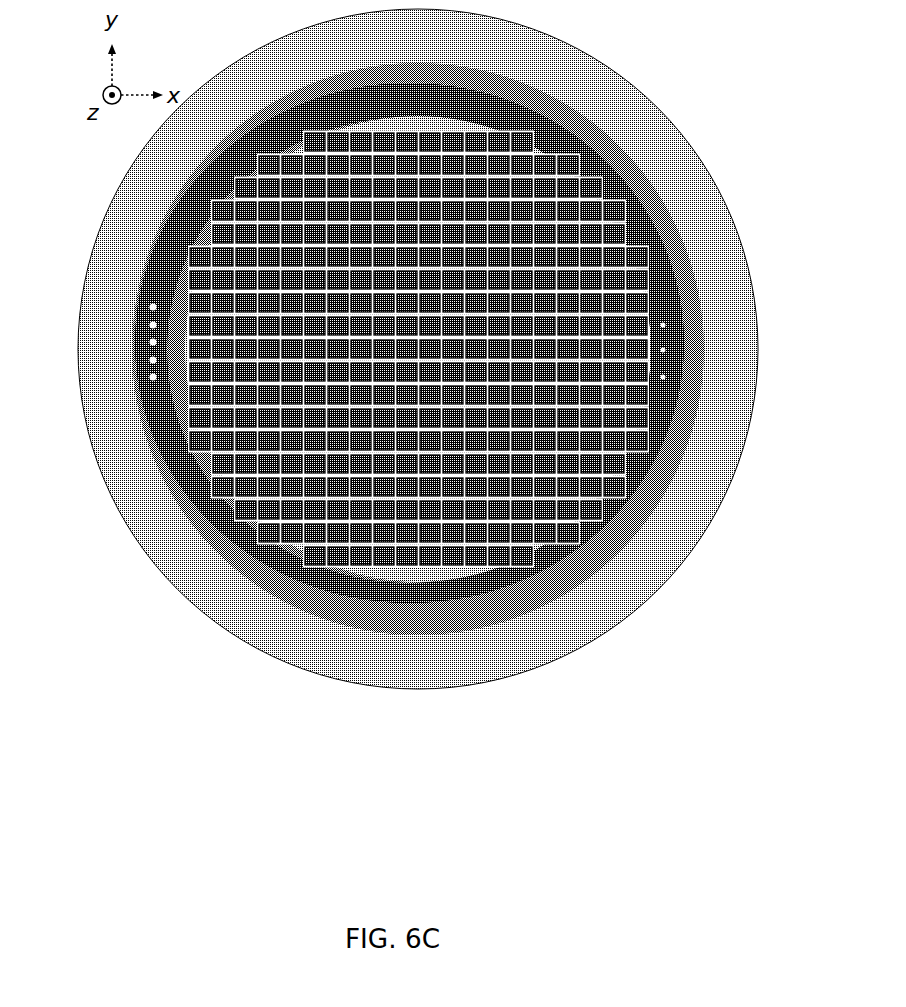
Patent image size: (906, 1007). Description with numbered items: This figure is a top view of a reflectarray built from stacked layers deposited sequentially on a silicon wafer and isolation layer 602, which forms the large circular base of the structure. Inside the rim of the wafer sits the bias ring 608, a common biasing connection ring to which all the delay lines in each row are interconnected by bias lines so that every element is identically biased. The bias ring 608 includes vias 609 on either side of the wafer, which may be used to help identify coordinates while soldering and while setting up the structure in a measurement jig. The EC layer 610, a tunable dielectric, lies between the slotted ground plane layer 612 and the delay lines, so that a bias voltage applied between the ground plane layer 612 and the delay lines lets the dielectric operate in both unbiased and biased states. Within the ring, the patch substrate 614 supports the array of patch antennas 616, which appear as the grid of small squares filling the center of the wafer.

The silicon wafer and isolation layer 602 is at (164, 537).
The bias ring 608 is at (151, 418).
The vias 609 is at (132, 312).
The EC layer 610 is at (704, 369).
The slotted ground plane layer 612 is at (674, 429).
The patch substrate 614 is at (640, 484).
The patch antennas 616 is at (596, 524).